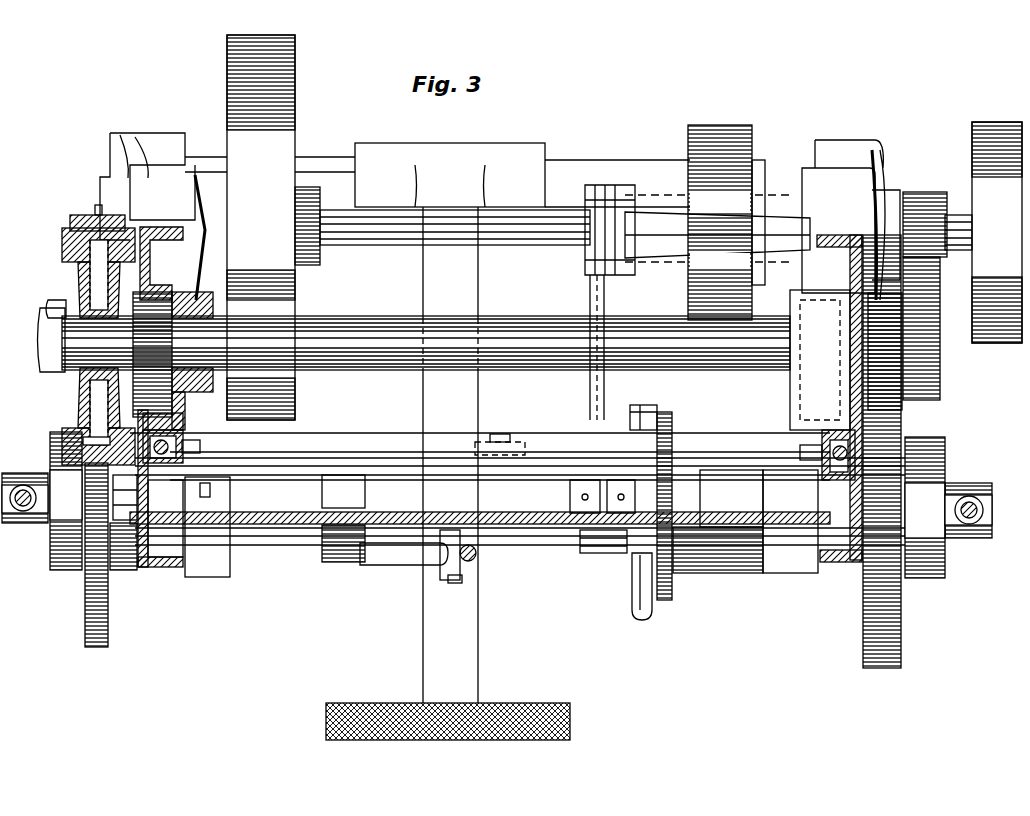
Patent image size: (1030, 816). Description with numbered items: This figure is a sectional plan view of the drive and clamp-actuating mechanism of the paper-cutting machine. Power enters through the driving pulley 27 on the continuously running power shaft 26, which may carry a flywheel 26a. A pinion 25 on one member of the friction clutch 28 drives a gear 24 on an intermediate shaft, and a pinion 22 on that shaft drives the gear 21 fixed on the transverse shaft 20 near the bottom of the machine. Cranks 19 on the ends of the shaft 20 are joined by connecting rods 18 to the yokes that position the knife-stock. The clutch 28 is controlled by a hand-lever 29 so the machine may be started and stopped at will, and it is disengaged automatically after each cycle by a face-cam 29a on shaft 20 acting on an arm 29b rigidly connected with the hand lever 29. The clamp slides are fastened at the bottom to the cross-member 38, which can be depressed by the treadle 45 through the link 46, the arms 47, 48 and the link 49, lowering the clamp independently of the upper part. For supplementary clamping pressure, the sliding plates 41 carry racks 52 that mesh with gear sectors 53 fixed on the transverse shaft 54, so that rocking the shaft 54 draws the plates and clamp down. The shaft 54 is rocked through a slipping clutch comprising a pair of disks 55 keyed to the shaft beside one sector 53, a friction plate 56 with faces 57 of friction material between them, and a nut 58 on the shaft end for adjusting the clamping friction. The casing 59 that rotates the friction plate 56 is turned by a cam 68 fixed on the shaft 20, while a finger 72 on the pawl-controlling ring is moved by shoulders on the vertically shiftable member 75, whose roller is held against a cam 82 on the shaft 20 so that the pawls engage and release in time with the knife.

The connecting rods 18 is at (23, 512).
The cranks 19 is at (58, 478).
The transverse shaft 20 is at (300, 548).
The gear 21 is at (902, 634).
The pinion 22 is at (900, 340).
The gear 24 is at (938, 380).
The pinion 25 is at (918, 196).
The power shaft 26 is at (376, 242).
The flywheel 26a is at (296, 96).
The driving pulley 27 is at (992, 122).
The friction clutch 28 is at (742, 130).
The hand-lever 29 is at (636, 617).
The face-cam 29a is at (660, 415).
The arm 29b is at (631, 420).
The cross-member 38 is at (553, 444).
The sliding plate 41 is at (212, 438).
The treadle 45 is at (571, 722).
The link 46 is at (470, 562).
The arm 47 is at (386, 562).
The arm 48 is at (390, 456).
The link 49 is at (494, 440).
The racks 52 is at (192, 378).
The gear sectors 53 is at (180, 360).
The transverse shaft 54 is at (40, 345).
The disks 55 is at (62, 252).
The friction plate 56 is at (78, 284).
The faces 57 is at (78, 398).
The nut 58 is at (48, 312).
The casing 59 is at (86, 215).
The cam 68 is at (100, 647).
The finger 72 is at (148, 524).
The vertically shiftable member 75 is at (138, 497).
The cam 82 is at (128, 572).